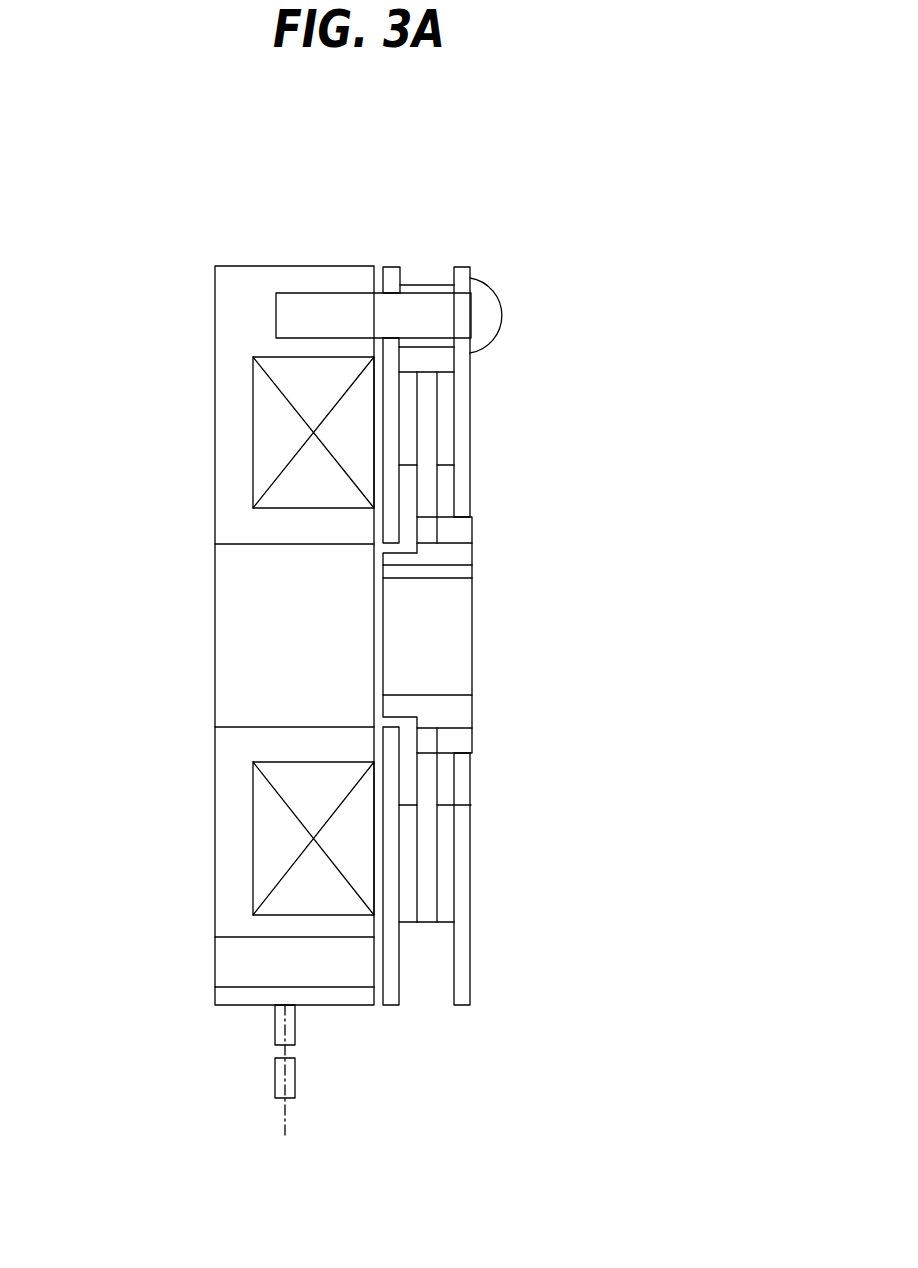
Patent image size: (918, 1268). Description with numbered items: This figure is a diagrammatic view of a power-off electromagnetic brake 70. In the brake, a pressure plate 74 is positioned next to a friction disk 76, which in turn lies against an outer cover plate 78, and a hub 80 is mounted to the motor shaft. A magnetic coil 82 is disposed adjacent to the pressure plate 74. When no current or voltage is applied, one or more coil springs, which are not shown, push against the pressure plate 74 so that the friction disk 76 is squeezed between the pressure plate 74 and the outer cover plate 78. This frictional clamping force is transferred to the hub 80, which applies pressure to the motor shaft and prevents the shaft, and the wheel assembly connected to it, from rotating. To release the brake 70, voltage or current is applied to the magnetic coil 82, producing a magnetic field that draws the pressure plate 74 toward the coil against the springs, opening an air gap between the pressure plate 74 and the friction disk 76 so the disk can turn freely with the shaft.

The power-off electromagnetic brake 70 is at (668, 332).
The pressure plate 74 is at (395, 267).
The friction disk 76 is at (428, 375).
The outer cover plate 78 is at (472, 432).
The hub 80 is at (463, 712).
The magnetic coil 82 is at (223, 427).